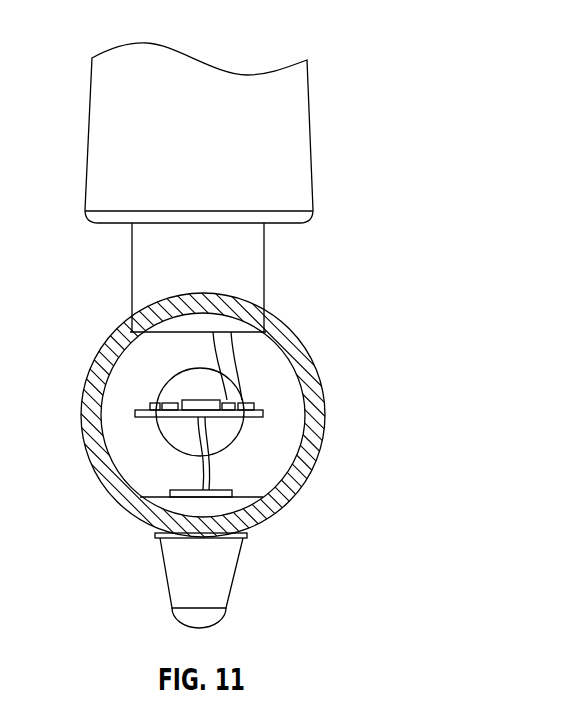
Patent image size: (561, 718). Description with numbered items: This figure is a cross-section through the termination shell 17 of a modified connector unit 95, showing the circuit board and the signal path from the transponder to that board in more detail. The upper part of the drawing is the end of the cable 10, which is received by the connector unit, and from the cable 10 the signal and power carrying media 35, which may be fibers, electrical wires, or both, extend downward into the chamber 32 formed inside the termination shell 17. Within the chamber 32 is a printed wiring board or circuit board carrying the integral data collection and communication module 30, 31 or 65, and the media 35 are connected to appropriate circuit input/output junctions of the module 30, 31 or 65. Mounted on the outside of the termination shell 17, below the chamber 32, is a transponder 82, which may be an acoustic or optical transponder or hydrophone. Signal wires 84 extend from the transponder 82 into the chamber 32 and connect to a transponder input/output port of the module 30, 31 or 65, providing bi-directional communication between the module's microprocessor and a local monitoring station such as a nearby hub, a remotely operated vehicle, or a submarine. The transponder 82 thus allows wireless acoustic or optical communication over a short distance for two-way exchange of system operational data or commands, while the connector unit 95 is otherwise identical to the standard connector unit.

The cable 10 is at (306, 191).
The modified connector unit 95 is at (355, 239).
The chamber 32 is at (289, 356).
The data collection and communication module 30 is at (291, 411).
The data collection and communication module 31 is at (291, 411).
The data collection and communication module 65 is at (277, 373).
The signal and power carrying media 35 is at (237, 342).
The termination shell 17 is at (268, 414).
The signal wires 84 is at (213, 480).
The transponder 82 is at (229, 556).